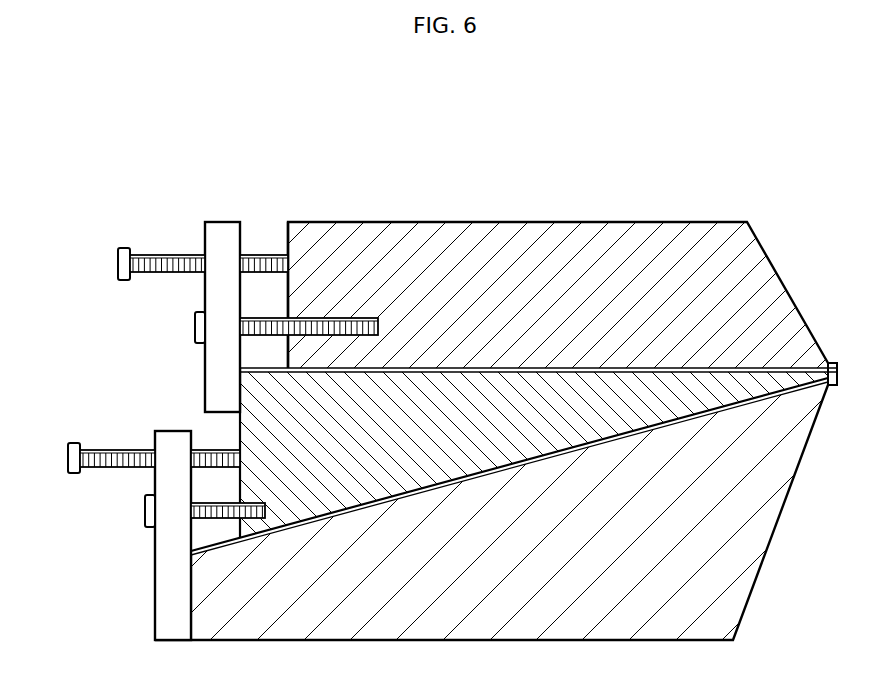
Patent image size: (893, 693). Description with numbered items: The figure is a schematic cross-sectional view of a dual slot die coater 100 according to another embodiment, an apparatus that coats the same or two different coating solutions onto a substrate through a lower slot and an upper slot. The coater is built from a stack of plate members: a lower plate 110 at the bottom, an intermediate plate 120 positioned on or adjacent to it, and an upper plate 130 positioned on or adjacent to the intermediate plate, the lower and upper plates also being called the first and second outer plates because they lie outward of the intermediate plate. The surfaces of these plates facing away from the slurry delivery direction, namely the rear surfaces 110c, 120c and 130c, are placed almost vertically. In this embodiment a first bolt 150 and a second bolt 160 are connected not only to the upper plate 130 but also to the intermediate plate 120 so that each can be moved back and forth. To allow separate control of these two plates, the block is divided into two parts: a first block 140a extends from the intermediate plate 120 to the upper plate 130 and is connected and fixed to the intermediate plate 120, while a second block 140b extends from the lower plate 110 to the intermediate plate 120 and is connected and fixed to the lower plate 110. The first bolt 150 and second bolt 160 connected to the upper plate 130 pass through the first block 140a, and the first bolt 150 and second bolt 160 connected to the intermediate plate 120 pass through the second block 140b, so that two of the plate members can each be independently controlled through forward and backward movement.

The dual slot die coater 100 is at (254, 145).
The lower plate 110 is at (747, 530).
The rear surface of the lower plate 110c is at (191, 593).
The intermediate plate 120 is at (733, 388).
The rear surface of the intermediate plate 120c is at (238, 483).
The upper plate 130 is at (752, 281).
The rear surface of the upper plate 130c is at (288, 291).
The first block 140a is at (223, 222).
The second block 140b is at (172, 431).
The first bolt 150 is at (118, 262).
The second bolt 160 is at (195, 324).